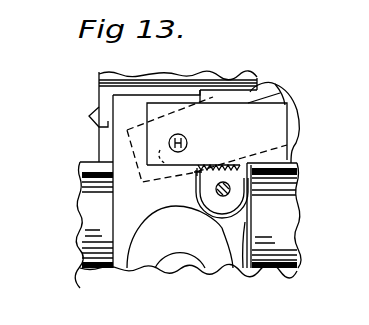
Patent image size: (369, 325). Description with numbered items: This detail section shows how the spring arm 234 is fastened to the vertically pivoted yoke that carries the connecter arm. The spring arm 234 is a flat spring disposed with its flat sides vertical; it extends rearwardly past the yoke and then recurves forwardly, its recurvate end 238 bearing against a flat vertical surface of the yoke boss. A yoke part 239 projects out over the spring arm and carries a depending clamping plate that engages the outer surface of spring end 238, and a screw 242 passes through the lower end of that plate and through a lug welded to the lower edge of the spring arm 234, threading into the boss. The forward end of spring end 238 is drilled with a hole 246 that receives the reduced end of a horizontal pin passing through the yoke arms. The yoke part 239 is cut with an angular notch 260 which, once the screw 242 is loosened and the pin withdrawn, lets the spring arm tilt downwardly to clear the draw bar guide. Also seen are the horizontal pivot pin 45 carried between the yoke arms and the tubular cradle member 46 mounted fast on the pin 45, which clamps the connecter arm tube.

The recurvate end 238 is at (157, 116).
The yoke part 239 is at (212, 103).
The angular notch 260 is at (250, 102).
The cradle member 46 is at (92, 165).
The hole 246 is at (187, 141).
The spring arm 234 is at (197, 187).
The screw 242 is at (229, 194).
The horizontal pivot pin 45 is at (180, 255).